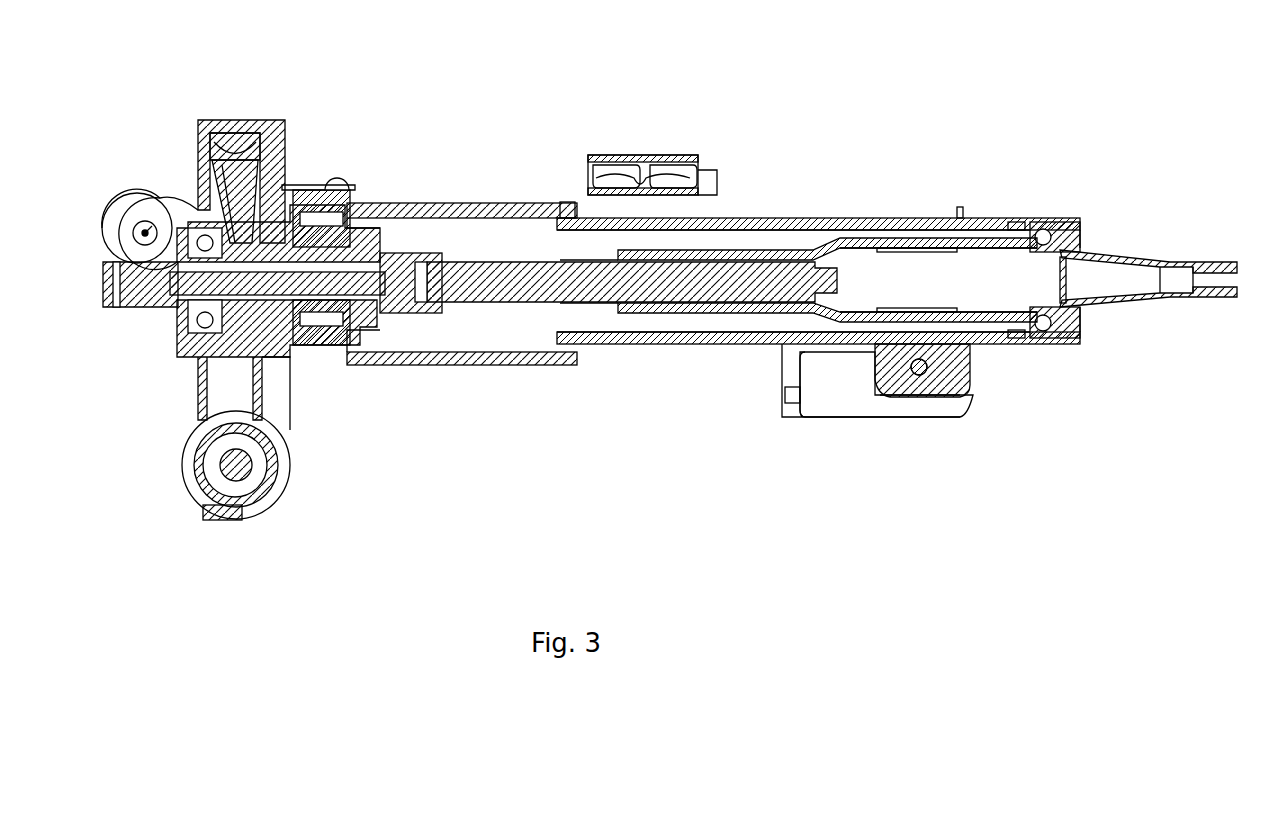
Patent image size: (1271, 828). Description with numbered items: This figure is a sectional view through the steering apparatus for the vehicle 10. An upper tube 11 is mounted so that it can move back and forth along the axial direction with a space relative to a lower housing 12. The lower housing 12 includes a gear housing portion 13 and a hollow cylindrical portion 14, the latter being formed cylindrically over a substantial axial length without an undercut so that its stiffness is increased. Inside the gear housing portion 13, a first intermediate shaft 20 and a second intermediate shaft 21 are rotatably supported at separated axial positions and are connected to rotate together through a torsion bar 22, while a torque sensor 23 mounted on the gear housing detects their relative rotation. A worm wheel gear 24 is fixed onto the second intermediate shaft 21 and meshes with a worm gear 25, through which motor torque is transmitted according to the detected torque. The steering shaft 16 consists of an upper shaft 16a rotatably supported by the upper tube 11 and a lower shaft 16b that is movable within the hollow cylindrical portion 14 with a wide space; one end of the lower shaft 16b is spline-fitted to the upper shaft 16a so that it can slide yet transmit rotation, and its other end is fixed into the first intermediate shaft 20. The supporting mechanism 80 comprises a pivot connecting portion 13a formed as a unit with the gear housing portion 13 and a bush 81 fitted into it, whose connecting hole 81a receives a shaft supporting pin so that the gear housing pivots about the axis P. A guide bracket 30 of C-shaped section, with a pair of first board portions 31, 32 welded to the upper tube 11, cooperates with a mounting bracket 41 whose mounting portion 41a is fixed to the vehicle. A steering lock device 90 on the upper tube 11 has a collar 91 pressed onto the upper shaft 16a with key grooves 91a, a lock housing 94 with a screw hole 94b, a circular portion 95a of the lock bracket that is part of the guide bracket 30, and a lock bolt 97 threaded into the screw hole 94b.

The steering apparatus for the vehicle 10 is at (958, 160).
The upper tube 11 is at (998, 218).
The lower housing 12 is at (462, 243).
The gear housing portion 13 is at (241, 120).
The pivot connecting portion 13a is at (128, 222).
The hollow cylindrical portion 14 is at (503, 203).
The steering shaft 16 is at (1148, 270).
The upper shaft 16a is at (1125, 300).
The lower shaft 16b is at (468, 302).
The first intermediate shaft 20 is at (404, 318).
The second intermediate shaft 21 is at (130, 307).
The torsion bar 22 is at (162, 307).
The torque sensor 23 is at (350, 190).
The worm wheel gear 24 is at (250, 182).
The worm gear 25 is at (272, 478).
The guide bracket 30 is at (818, 278).
The first board portion 31 is at (730, 218).
The first board portion 32 is at (622, 346).
The mounting bracket 41 is at (649, 129).
The mounting portion 41a is at (640, 162).
The supporting mechanism 80 is at (125, 180).
The bush 81 is at (112, 240).
The connecting hole 81a is at (135, 225).
The axis P is at (146, 227).
The steering lock device 90 is at (894, 438).
The collar 91 is at (798, 217).
The key groove 91a is at (925, 246).
The lock housing 94 is at (905, 395).
The screw hole 94b is at (915, 385).
The circular portion 95a is at (913, 236).
The lock bolt 97 is at (923, 375).